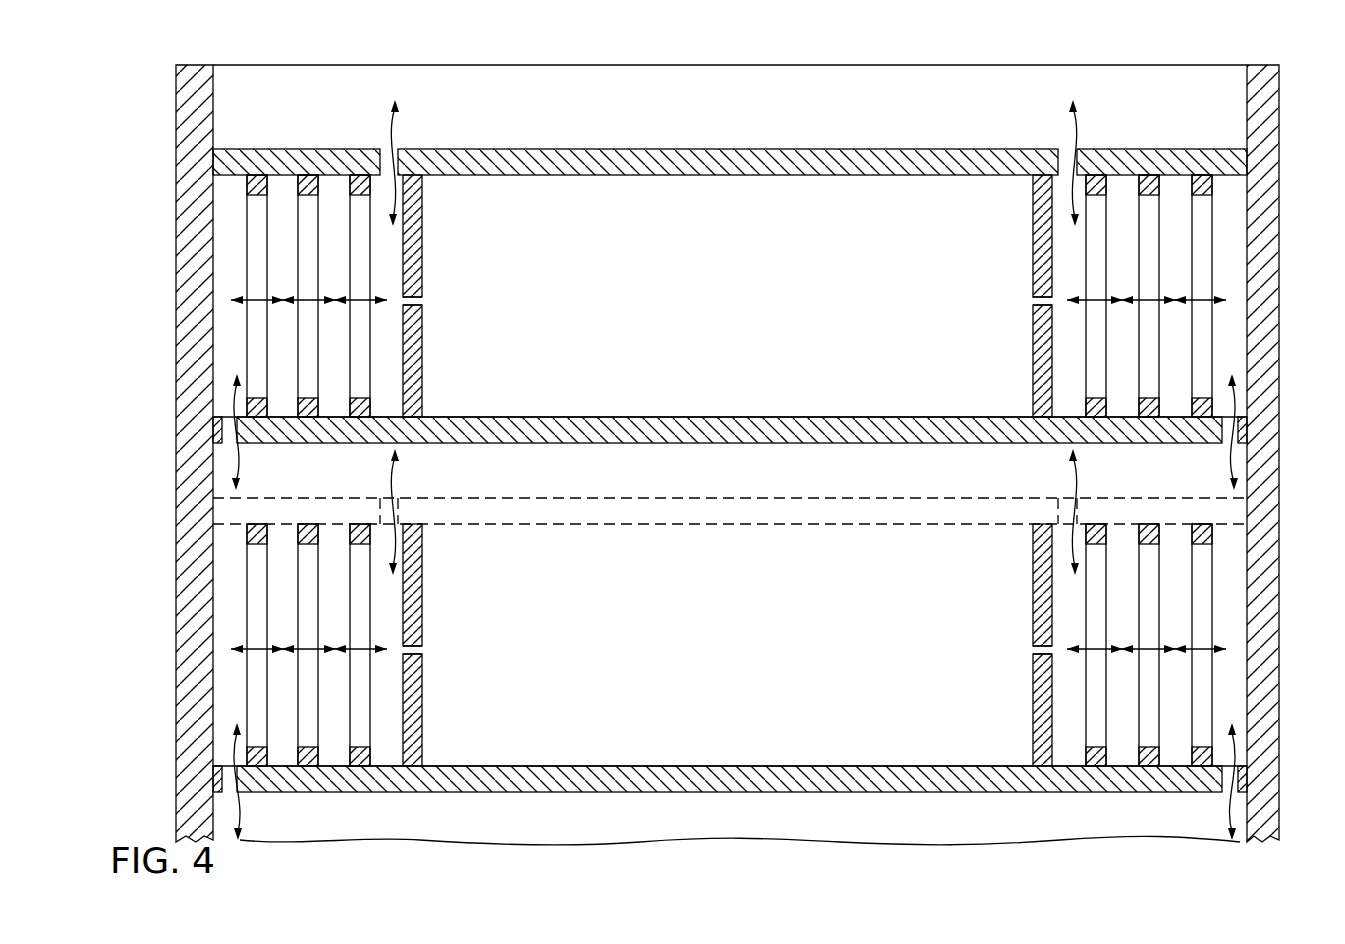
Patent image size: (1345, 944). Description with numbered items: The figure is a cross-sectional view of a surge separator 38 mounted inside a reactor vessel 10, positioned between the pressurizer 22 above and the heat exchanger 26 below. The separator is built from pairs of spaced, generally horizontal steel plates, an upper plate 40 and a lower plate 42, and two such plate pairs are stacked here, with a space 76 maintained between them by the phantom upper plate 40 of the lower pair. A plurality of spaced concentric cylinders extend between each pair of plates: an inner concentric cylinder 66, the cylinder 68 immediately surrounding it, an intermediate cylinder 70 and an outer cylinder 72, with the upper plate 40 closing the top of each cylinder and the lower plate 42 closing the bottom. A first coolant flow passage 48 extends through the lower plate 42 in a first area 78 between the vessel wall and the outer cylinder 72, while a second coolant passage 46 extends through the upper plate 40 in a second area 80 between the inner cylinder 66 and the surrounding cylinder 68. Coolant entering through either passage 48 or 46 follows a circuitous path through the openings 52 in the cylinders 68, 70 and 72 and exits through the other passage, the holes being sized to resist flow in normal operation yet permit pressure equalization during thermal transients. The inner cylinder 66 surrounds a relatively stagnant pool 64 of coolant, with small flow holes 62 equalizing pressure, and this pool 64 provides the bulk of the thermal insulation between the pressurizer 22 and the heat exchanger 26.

The reactor vessel 10 is at (176, 120).
The pressurizer 22 is at (748, 99).
The heat exchanger 26 is at (748, 829).
The surge separator 38 is at (862, 125).
The upper plate 40 is at (705, 149).
The lower plate 42 is at (695, 417).
The second coolant passage 46 is at (398, 172).
The first coolant flow passage 48 is at (222, 407).
The openings 52 is at (258, 218).
The flow holes 62 is at (422, 301).
The stagnant pool 64 is at (748, 316).
The inner concentric cylinder 66 is at (422, 215).
The concentric cylinder 68 is at (367, 406).
The concentric cylinder 70 is at (313, 406).
The outer concentric cylinder 72 is at (264, 406).
The space 76 is at (220, 447).
The first area 78 is at (243, 274).
The second area 80 is at (400, 274).